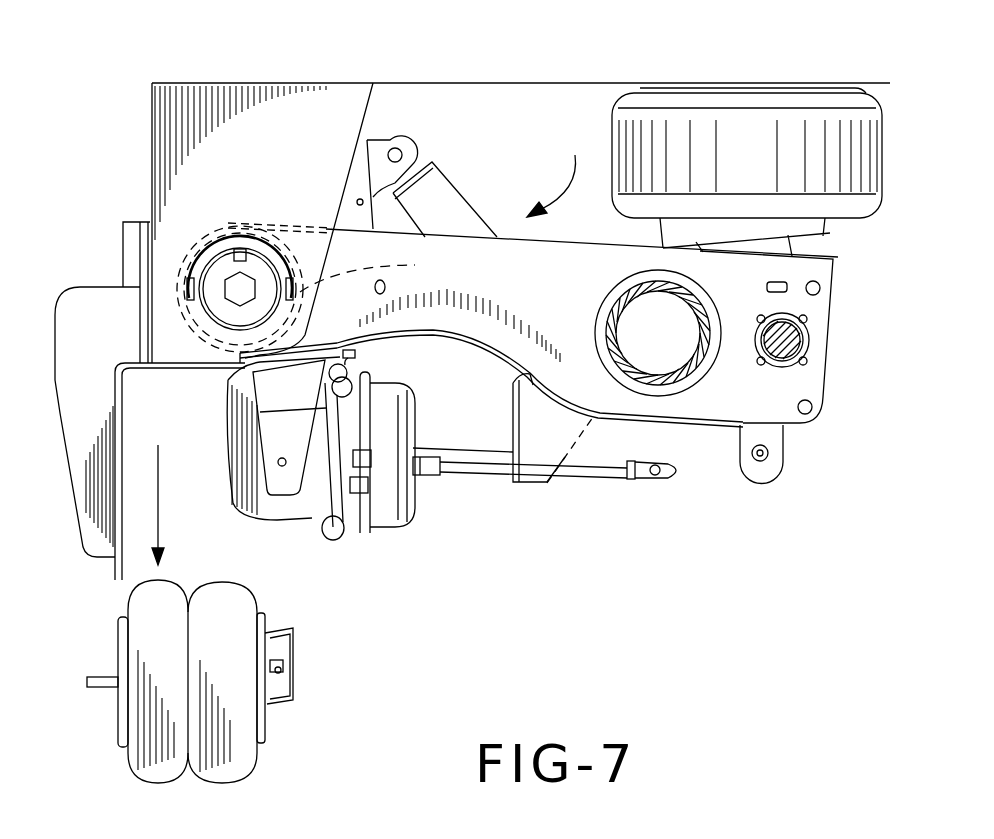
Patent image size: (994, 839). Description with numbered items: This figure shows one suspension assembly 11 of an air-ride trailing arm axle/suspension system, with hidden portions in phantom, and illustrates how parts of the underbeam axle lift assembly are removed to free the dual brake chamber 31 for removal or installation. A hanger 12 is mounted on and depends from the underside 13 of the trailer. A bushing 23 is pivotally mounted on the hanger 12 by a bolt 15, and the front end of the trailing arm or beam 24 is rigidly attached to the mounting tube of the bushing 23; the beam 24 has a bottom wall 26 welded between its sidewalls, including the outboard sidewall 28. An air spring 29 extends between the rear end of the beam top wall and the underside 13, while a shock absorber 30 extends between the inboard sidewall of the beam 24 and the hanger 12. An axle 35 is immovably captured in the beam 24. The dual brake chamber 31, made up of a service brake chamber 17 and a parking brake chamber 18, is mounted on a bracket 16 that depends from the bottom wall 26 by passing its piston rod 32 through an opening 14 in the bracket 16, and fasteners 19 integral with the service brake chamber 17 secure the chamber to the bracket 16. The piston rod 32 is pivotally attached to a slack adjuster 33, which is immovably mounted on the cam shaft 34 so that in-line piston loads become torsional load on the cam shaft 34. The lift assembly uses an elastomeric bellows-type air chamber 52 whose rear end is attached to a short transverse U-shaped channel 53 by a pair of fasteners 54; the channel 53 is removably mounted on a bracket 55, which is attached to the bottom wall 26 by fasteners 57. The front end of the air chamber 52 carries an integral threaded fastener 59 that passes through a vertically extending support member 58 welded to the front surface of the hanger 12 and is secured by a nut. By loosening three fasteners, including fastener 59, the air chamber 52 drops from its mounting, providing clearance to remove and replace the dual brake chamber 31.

The suspension assembly 11 is at (555, 172).
The hanger 12 is at (281, 178).
The underside 13 is at (412, 83).
The opening 14 is at (565, 463).
The bolt 15 is at (240, 289).
The bracket 16 is at (528, 480).
The service brake chamber 17 is at (376, 520).
The parking brake chamber 18 is at (236, 488).
The fasteners 19 is at (420, 477).
The bushing 23 is at (376, 272).
The beam 24 is at (826, 396).
The bottom wall 26 is at (493, 347).
The outboard sidewall 28 is at (564, 311).
The air spring 29 is at (762, 141).
The shock absorber 30 is at (432, 197).
The dual brake chamber 31 is at (355, 535).
The piston rod 32 is at (478, 464).
The slack adjuster 33 is at (757, 470).
The cam shaft 34 is at (783, 340).
The axle 35 is at (665, 380).
The air chamber 52 is at (240, 765).
The U-shaped channel 53 is at (285, 705).
The fasteners 54 is at (302, 655).
The bracket 55 is at (311, 443).
The fasteners 57 is at (352, 372).
The support member 58 is at (85, 430).
The fastener 59 is at (100, 677).